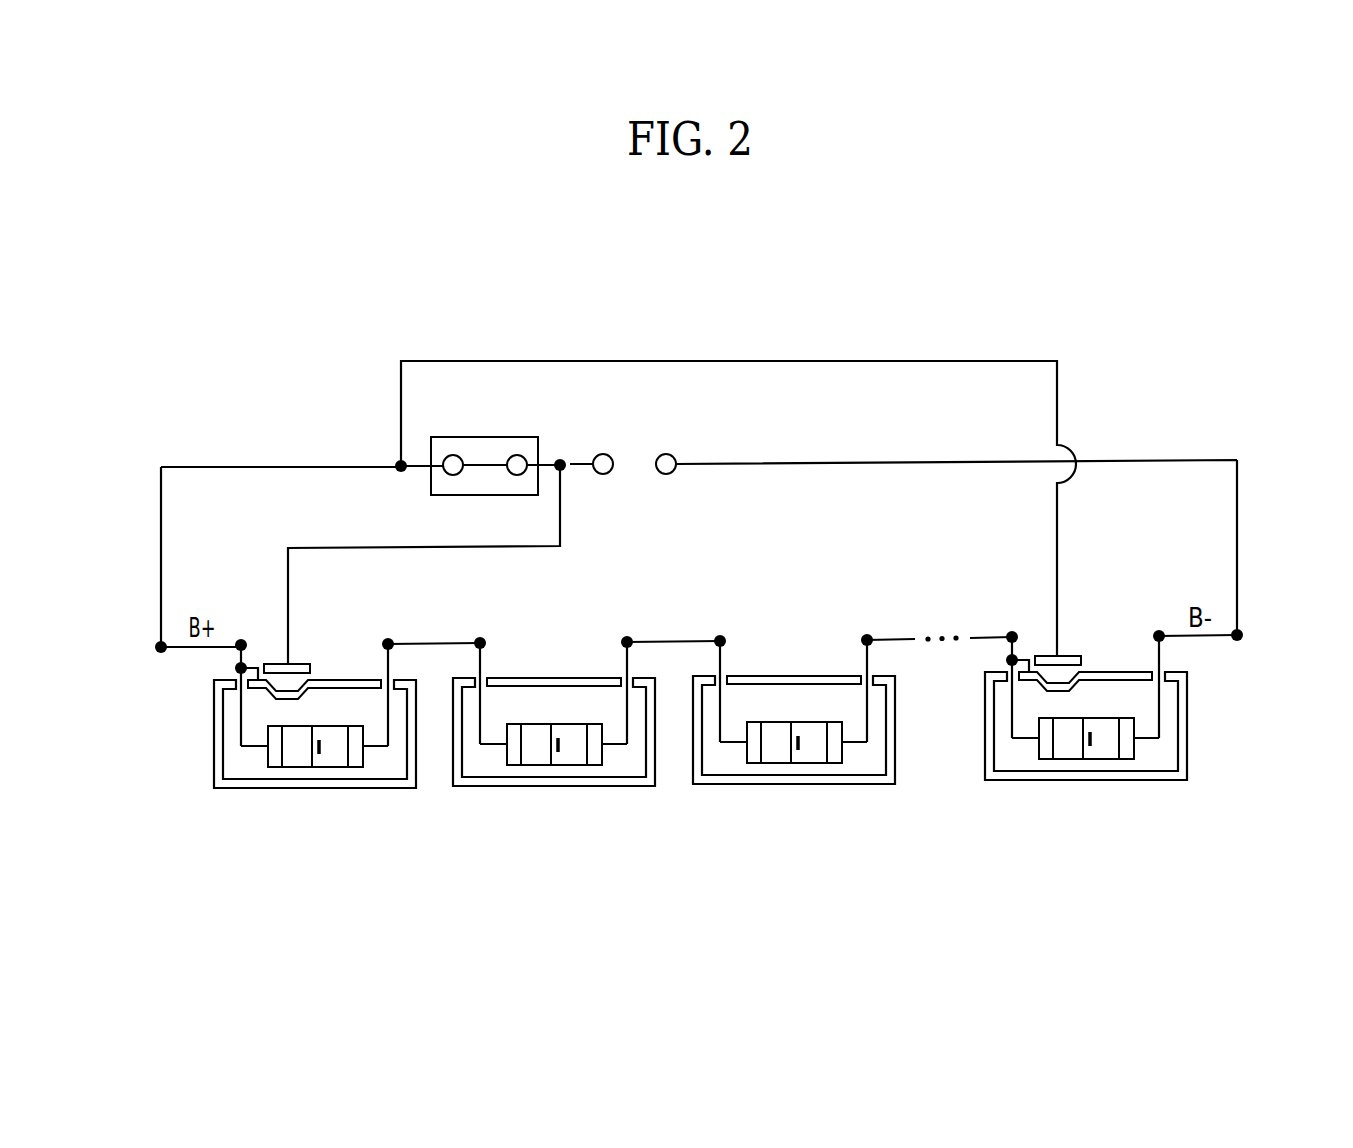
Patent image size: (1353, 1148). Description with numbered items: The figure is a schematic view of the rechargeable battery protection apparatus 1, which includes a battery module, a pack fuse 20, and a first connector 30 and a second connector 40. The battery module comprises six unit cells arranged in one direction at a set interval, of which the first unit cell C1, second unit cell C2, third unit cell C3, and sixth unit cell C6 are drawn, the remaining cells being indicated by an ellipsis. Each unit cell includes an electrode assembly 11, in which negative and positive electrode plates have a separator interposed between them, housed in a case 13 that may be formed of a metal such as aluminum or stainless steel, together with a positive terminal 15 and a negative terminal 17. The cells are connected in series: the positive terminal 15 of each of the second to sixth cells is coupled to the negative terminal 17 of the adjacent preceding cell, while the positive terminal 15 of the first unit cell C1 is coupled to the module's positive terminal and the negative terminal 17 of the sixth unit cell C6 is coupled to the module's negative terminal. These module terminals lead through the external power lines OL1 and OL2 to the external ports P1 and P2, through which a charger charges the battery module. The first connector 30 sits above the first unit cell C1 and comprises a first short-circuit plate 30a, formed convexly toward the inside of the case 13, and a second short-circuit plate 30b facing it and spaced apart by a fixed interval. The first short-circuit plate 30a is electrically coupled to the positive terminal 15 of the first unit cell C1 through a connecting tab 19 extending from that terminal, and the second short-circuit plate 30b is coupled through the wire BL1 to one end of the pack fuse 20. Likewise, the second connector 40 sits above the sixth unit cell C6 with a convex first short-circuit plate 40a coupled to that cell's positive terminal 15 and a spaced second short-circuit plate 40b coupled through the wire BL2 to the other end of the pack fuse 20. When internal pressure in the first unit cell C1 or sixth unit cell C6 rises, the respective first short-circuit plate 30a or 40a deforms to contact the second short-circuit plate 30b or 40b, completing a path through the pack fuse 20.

The rechargeable battery protection apparatus 1 is at (1043, 306).
The electrode assembly 11 is at (304, 780).
The case 13 is at (243, 790).
The positive terminal 15 is at (241, 636).
The negative terminal 17 is at (388, 637).
The connecting tab 19 is at (252, 667).
The pack fuse 20 is at (518, 437).
The first connector 30 is at (314, 542).
The first short-circuit plate 30a is at (318, 699).
The second short-circuit plate 30b is at (314, 668).
The second connector 40 is at (1089, 610).
The first short-circuit plate 40a is at (1088, 690).
The second short-circuit plate 40b is at (1081, 660).
The first unit cell C1 is at (315, 620).
The second unit cell C2 is at (602, 798).
The third unit cell C3 is at (838, 795).
The sixth unit cell C6 is at (1086, 691).
The external port P1 is at (603, 474).
The external port P2 is at (666, 474).
The wire BL1 is at (513, 548).
The wire BL2 is at (1058, 392).
The external power line OL1 is at (161, 551).
The external power line OL2 is at (1237, 529).